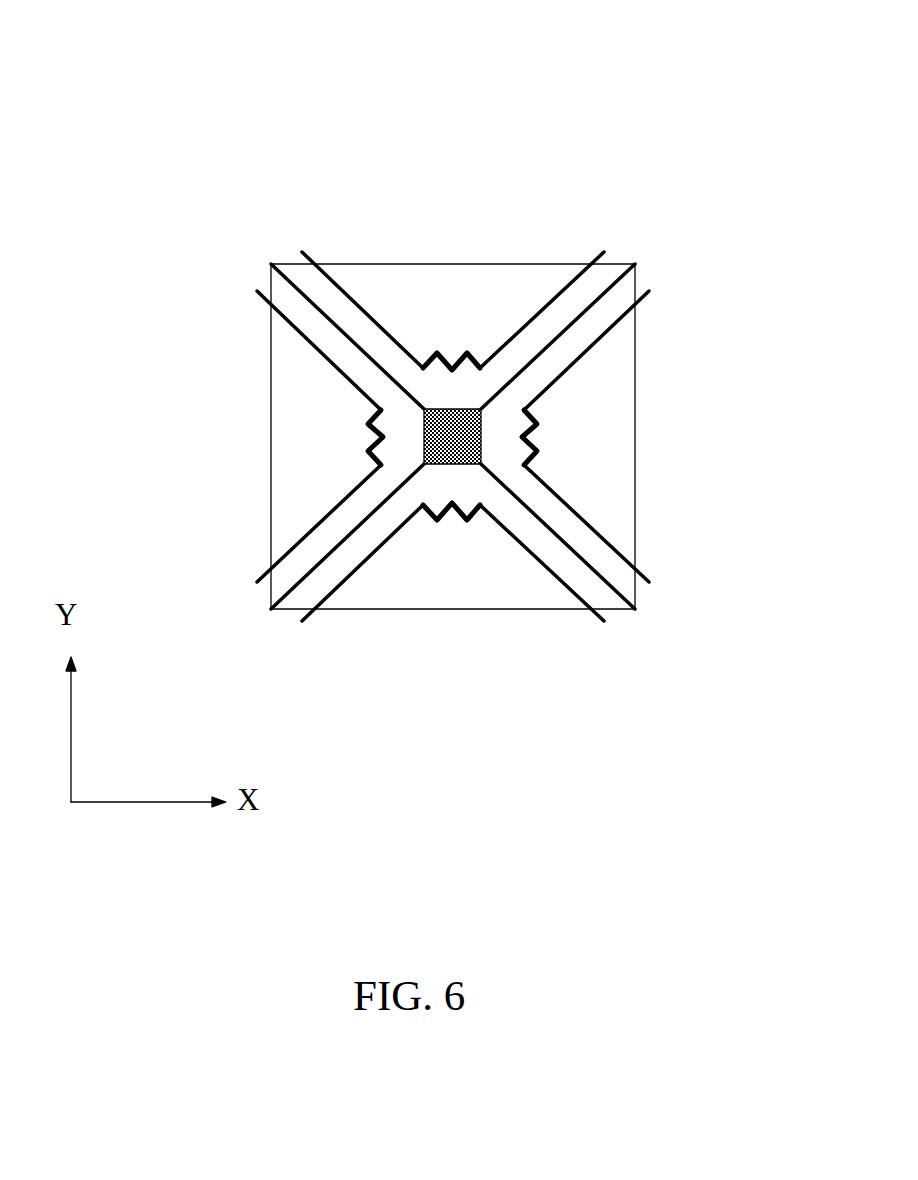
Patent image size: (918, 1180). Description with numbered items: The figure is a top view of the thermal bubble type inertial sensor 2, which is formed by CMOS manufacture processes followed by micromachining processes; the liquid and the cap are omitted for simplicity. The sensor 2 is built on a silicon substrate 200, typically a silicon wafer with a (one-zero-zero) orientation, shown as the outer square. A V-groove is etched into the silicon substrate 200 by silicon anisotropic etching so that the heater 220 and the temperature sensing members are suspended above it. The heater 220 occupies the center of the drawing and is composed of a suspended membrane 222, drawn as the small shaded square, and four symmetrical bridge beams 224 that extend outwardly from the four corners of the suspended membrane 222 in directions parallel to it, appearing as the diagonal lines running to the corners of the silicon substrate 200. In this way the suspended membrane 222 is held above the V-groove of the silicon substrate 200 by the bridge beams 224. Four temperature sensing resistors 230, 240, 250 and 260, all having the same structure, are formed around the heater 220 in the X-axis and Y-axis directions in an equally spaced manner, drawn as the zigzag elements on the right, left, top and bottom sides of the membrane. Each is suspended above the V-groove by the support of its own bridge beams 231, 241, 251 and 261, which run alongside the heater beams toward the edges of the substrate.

The sensor 2 is at (656, 110).
The silicon substrate 200 is at (500, 292).
The heater 220 is at (424, 427).
The suspended membrane 222 is at (467, 440).
The bridge beams 224 is at (608, 292).
The temperature sensing resistor 230 is at (538, 447).
The bridge beam 231 is at (567, 373).
The temperature sensing resistor 240 is at (367, 438).
The bridge beam 241 is at (353, 492).
The temperature sensing resistor 250 is at (450, 340).
The bridge beam 251 is at (363, 310).
The temperature sensing resistor 260 is at (468, 520).
The bridge beam 261 is at (382, 547).